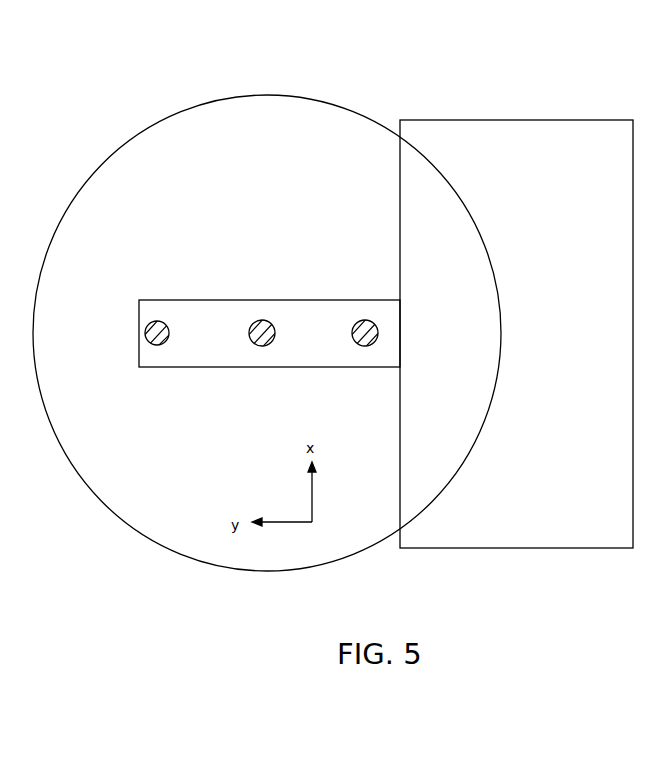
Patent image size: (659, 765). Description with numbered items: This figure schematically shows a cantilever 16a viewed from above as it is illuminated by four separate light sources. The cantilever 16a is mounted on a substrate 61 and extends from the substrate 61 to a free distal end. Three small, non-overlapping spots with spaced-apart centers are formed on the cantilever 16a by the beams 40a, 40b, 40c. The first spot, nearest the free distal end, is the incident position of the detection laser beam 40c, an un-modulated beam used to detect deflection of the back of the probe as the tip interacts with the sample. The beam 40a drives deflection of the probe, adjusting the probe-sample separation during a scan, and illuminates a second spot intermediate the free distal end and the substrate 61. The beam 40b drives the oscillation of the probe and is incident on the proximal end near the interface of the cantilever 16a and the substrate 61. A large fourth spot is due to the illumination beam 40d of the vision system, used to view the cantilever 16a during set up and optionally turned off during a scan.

The illumination beam 40d is at (267, 95).
The substrate 61 is at (522, 119).
The cantilever 16a is at (215, 300).
The deflection beam 40a is at (262, 346).
The oscillation beam 40b is at (364, 346).
The detection laser beam 40c is at (147, 329).